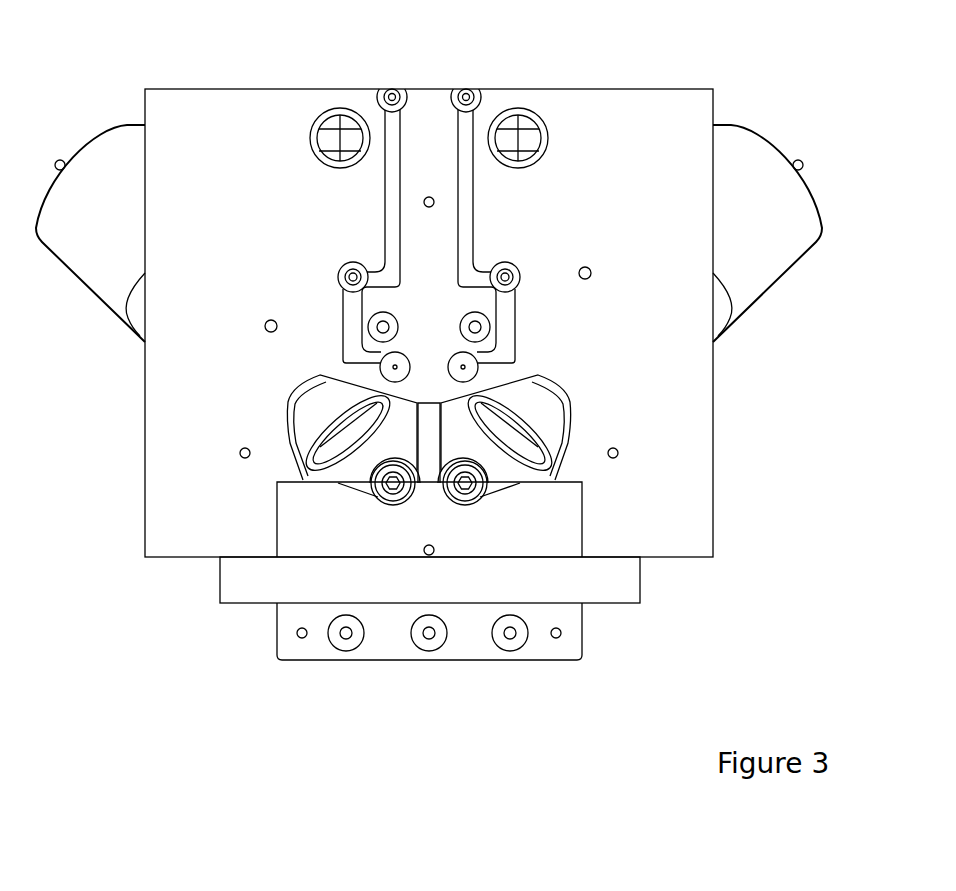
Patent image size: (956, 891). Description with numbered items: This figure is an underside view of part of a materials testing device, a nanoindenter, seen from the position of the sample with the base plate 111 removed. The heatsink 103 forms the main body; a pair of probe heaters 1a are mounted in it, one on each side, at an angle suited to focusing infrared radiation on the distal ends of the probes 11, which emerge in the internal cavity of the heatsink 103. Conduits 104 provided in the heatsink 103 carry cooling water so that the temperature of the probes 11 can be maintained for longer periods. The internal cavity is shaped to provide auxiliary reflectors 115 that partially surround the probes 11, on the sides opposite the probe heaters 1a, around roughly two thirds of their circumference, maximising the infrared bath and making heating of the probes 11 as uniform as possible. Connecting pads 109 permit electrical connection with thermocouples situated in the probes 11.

The probe heater 1a is at (86, 114).
The heatsink 103 is at (165, 497).
The conduits 104 is at (516, 136).
The base plate 111 is at (467, 278).
The connecting pad 109 is at (393, 367).
The auxiliary reflectors 115 is at (452, 505).
The probes 11 is at (388, 490).